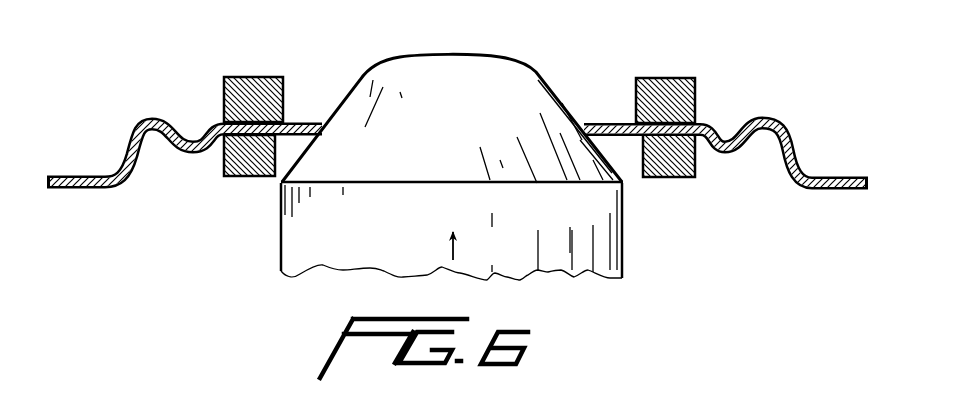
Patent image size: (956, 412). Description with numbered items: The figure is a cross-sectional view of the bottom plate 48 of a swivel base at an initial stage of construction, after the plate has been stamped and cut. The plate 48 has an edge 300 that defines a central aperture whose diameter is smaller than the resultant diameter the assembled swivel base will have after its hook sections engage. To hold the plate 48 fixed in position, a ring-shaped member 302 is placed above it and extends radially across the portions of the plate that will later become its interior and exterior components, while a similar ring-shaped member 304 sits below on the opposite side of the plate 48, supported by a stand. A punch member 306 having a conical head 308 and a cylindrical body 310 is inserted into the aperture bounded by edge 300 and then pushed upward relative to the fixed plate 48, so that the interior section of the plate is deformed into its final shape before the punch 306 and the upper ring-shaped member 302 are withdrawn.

The bottom plate 48 is at (802, 139).
The edge 300 is at (585, 127).
The ring-shaped member 302 is at (253, 82).
The ring-shaped member 304 is at (240, 170).
The punch member 306 is at (630, 238).
The conical head 308 is at (471, 138).
The cylindrical body 310 is at (514, 257).